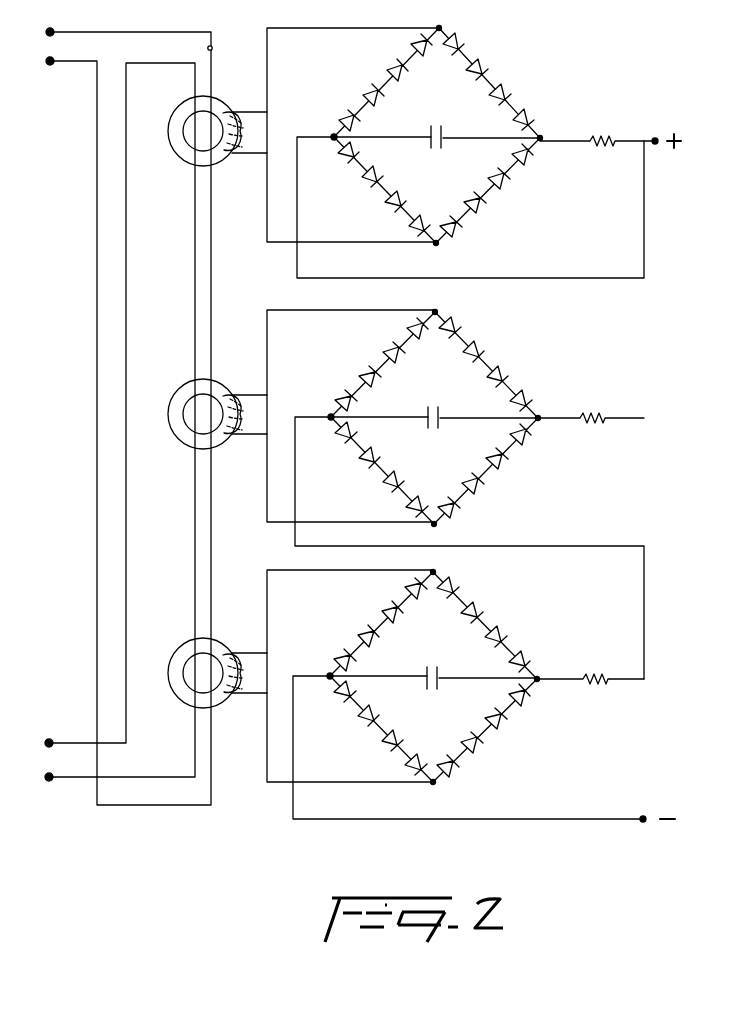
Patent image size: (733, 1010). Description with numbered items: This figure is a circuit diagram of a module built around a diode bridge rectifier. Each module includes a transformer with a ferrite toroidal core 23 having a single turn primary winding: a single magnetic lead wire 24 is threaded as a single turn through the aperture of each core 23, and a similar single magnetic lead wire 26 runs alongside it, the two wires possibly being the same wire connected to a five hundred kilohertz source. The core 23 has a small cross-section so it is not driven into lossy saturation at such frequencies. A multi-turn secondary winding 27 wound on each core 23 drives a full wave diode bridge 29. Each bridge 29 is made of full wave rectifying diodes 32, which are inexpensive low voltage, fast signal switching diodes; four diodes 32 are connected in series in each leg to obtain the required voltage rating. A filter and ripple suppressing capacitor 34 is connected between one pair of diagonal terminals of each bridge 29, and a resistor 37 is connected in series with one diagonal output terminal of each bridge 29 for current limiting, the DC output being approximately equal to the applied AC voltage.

The toroidal core 23 is at (180, 120).
The magnetic lead wire 24 is at (212, 46).
The magnetic lead wire 26 is at (197, 200).
The secondary winding 27 is at (220, 155).
The full wave diode bridge 29 is at (446, 101).
The full wave rectifying diodes 32 is at (395, 70).
The filter and ripple suppressing capacitor 34 is at (437, 149).
The resistor 37 is at (600, 138).